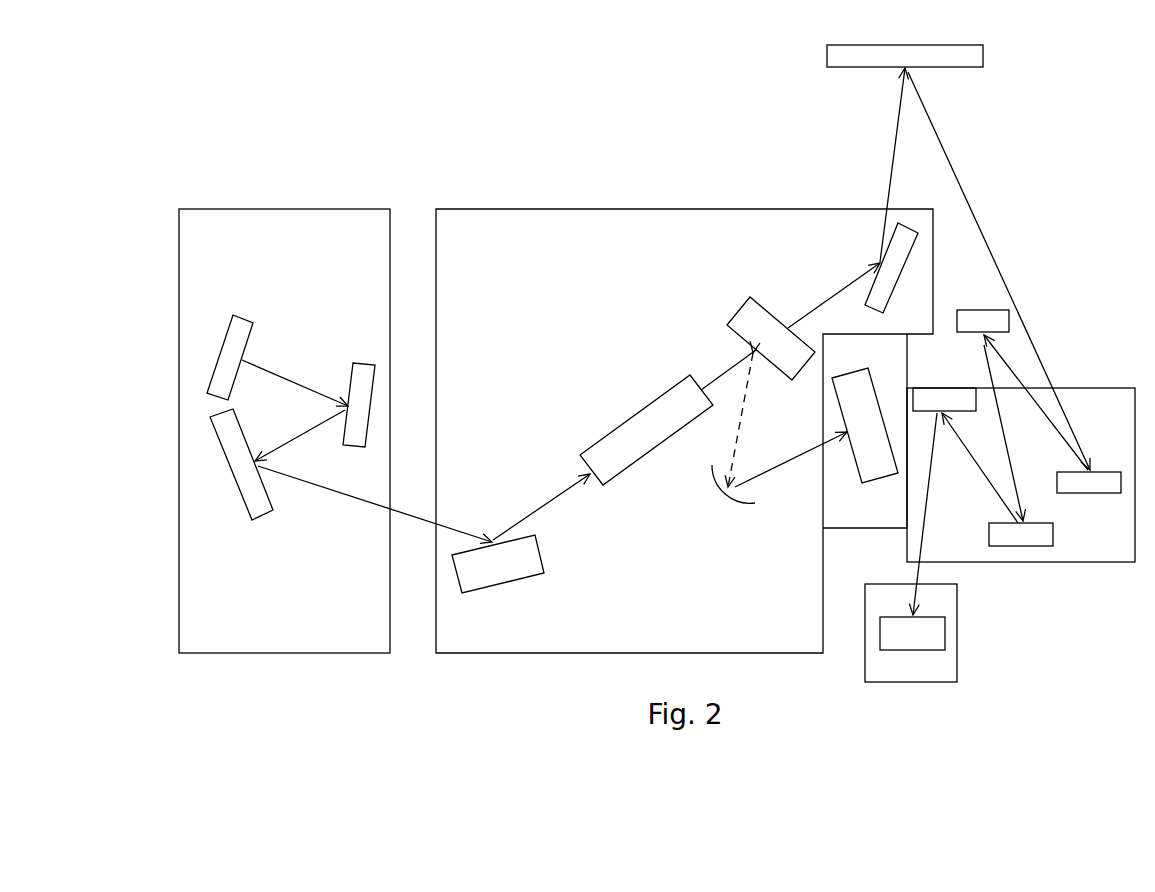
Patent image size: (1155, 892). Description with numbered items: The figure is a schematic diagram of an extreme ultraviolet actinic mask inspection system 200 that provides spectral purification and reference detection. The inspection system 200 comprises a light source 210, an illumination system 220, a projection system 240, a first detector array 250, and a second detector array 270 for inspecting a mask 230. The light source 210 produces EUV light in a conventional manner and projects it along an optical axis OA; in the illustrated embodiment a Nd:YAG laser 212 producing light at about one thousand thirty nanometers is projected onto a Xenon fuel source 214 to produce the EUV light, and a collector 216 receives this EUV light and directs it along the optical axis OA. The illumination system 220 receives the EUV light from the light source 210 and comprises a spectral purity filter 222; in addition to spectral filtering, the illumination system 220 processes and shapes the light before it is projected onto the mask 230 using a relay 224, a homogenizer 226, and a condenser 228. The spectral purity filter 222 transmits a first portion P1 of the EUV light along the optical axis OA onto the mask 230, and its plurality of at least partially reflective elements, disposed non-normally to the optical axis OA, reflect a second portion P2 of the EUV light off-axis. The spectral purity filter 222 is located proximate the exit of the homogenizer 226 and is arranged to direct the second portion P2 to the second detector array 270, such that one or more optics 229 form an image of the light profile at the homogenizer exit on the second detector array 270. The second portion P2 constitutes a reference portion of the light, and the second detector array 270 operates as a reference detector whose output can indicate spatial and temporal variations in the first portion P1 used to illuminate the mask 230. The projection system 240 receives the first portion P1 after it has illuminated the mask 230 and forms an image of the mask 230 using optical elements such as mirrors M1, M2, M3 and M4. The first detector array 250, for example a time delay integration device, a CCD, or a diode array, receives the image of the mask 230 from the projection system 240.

The extreme ultraviolet actinic mask inspection system 200 is at (310, 78).
The light source 210 is at (285, 208).
The Nd:YAG laser 212 is at (240, 314).
The Xenon fuel source 214 is at (360, 363).
The collector 216 is at (262, 521).
The illumination system 220 is at (641, 209).
The spectral purity filter 222 is at (738, 310).
The relay 224 is at (507, 583).
The homogenizer 226 is at (625, 468).
The condenser 228 is at (905, 270).
The optics 229 is at (740, 506).
The mask 230 is at (984, 57).
The projection system 240 is at (1080, 562).
The first detector array 250 is at (958, 632).
The second detector array 270 is at (853, 529).
The mirror M1 is at (1095, 494).
The mirror M2 is at (977, 310).
The mirror M3 is at (989, 535).
The mirror M4 is at (945, 388).
The optical axis OA is at (415, 515).
The first portion of the EUV light P1 is at (818, 307).
The second portion of the EUV light P2 is at (745, 395).